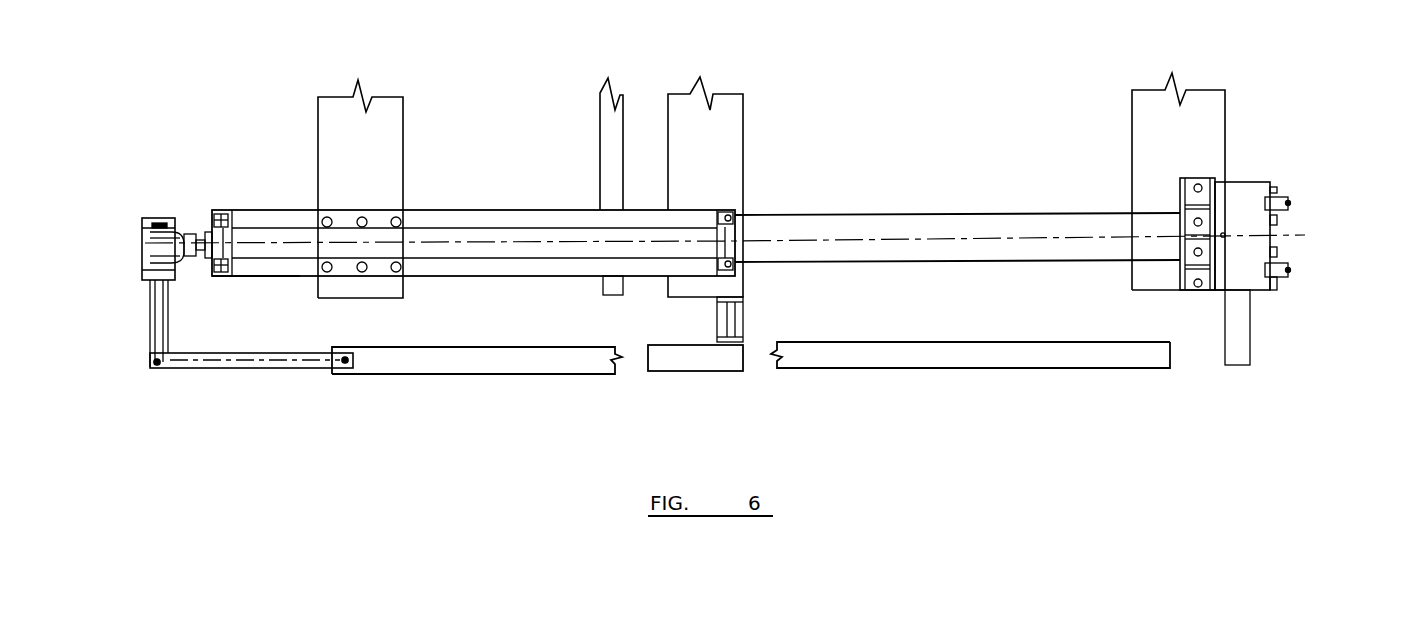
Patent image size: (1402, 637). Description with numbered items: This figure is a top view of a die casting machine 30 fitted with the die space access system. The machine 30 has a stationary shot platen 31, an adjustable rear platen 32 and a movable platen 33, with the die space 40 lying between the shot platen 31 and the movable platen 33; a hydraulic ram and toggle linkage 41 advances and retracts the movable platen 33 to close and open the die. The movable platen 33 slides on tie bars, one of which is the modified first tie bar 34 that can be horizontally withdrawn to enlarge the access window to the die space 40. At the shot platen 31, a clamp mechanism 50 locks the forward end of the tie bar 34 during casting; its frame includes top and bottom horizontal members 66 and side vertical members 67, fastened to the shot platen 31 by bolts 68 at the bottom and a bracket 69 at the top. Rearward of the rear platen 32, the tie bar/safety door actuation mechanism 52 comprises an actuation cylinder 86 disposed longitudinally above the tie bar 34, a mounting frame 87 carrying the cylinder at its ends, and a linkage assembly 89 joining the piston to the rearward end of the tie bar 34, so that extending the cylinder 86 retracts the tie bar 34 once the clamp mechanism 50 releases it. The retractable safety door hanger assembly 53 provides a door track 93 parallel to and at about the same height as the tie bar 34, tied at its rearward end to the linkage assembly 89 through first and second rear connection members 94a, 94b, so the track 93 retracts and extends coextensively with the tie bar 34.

The die casting machine 30 is at (251, 110).
The stationary shot platen 31 is at (1207, 122).
The adjustable rear platen 32 is at (385, 157).
The movable platen 33 is at (730, 160).
The first tie bar 34 is at (942, 250).
The die space 40 is at (924, 105).
The hydraulic ram and toggle linkage 41 is at (646, 91).
The clamp mechanism 50 is at (1283, 315).
The tie bar/safety door actuation mechanism 52 is at (187, 204).
The retractable safety door hanger assembly 53 is at (261, 409).
The horizontal members 66 is at (1256, 224).
The side vertical members 67 is at (1280, 200).
The bolts 68 is at (1280, 250).
The bracket 69 is at (1182, 190).
The actuation cylinder 86 is at (462, 248).
The mounting frame 87 is at (262, 268).
The linkage assembly 89 is at (127, 258).
The door track 93 is at (405, 362).
The first rear connection member 94a is at (185, 368).
The second rear connection member 94b is at (150, 325).